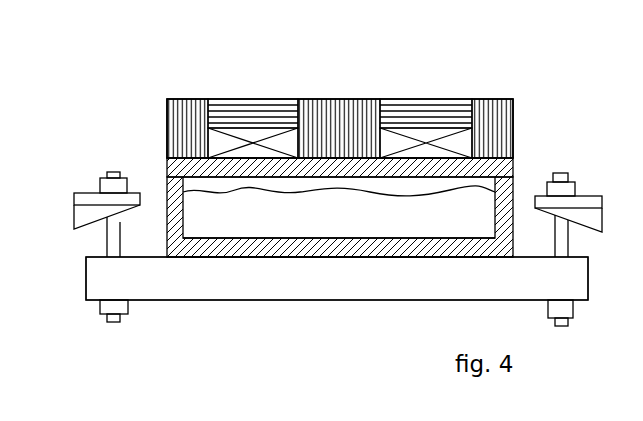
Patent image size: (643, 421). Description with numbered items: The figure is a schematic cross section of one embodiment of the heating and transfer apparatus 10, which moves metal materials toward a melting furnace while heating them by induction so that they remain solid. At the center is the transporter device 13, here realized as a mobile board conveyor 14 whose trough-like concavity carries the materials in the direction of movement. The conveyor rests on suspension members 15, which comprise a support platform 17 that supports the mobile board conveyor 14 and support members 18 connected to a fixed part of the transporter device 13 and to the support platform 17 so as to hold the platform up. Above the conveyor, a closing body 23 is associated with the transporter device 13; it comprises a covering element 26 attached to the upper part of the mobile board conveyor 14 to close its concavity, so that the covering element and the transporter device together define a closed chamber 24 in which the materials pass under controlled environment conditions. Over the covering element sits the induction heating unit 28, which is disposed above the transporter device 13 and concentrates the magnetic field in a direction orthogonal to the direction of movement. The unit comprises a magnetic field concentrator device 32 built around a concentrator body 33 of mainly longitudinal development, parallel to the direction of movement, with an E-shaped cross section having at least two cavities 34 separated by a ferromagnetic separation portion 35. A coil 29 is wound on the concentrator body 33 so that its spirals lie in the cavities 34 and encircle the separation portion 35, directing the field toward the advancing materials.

The heating and transfer apparatus 10 is at (535, 120).
The transporter device 13 is at (517, 180).
The mobile board conveyor 14 is at (390, 247).
The suspension members 15 is at (188, 272).
The support platform 17 is at (268, 286).
The support members 18 is at (113, 233).
The closing body 23 is at (165, 165).
The chamber 24 is at (253, 185).
The covering element 26 is at (417, 168).
The induction heating unit 28 is at (493, 98).
The coil 29 is at (450, 127).
The magnetic field concentrator device 32 is at (350, 98).
The concentrator body 33 is at (187, 116).
The cavities 34 is at (298, 137).
The ferromagnetic separation portion 35 is at (315, 112).